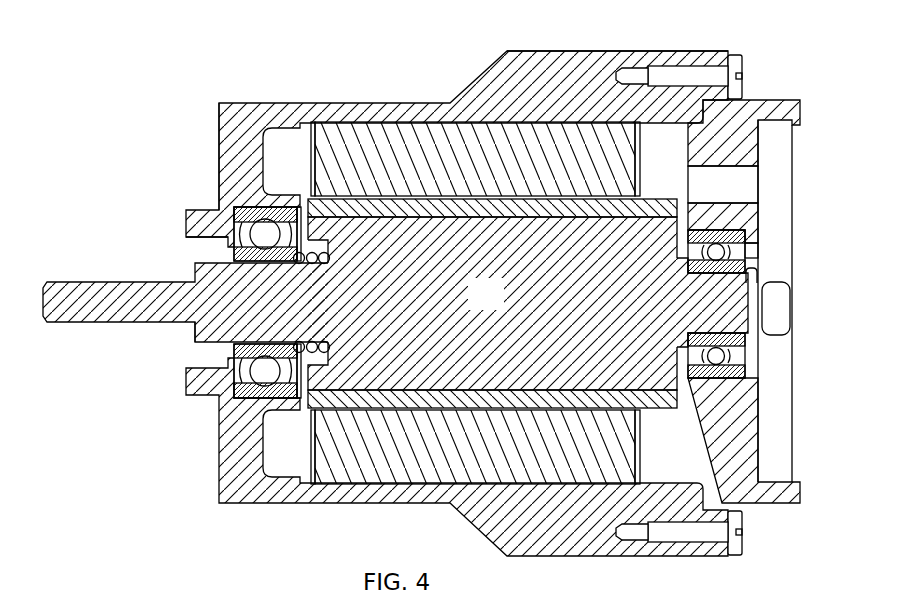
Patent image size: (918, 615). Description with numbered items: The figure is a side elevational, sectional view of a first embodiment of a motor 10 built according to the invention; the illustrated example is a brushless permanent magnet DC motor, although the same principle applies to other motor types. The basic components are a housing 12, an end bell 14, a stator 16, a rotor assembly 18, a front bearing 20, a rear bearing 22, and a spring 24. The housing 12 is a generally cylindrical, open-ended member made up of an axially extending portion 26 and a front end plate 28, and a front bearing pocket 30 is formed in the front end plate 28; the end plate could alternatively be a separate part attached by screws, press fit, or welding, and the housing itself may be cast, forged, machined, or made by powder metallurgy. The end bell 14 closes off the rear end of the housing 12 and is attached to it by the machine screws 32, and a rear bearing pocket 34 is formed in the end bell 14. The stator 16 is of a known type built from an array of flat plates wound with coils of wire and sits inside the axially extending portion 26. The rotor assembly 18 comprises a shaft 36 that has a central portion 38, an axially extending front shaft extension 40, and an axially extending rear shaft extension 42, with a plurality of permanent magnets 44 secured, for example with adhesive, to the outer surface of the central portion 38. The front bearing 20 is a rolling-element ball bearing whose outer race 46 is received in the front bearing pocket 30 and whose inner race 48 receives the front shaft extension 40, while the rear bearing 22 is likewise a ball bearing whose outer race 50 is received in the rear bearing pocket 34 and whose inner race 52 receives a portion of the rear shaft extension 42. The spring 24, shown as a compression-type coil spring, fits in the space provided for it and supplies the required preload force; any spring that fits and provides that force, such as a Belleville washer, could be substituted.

The motor 10 is at (308, 28).
The housing 12 is at (278, 101).
The end bell 14 is at (783, 103).
The stator 16 is at (383, 128).
The rotor assembly 18 is at (662, 415).
The front bearing 20 is at (212, 243).
The rear bearing 22 is at (755, 262).
The spring 24 is at (314, 352).
The axially extending portion 26 is at (545, 51).
The front end plate 28 is at (219, 135).
The front bearing pocket 30 is at (255, 195).
The machine screws 32 is at (745, 62).
The rear bearing pocket 34 is at (740, 197).
The shaft 36 is at (172, 341).
The central portion 38 is at (499, 306).
The front shaft extension 40 is at (58, 318).
The rear shaft extension 42 is at (738, 327).
The permanent magnets 44 is at (668, 197).
The outer race 46 is at (214, 400).
The inner race 48 is at (234, 258).
The outer race 50 is at (738, 372).
The inner race 52 is at (751, 272).